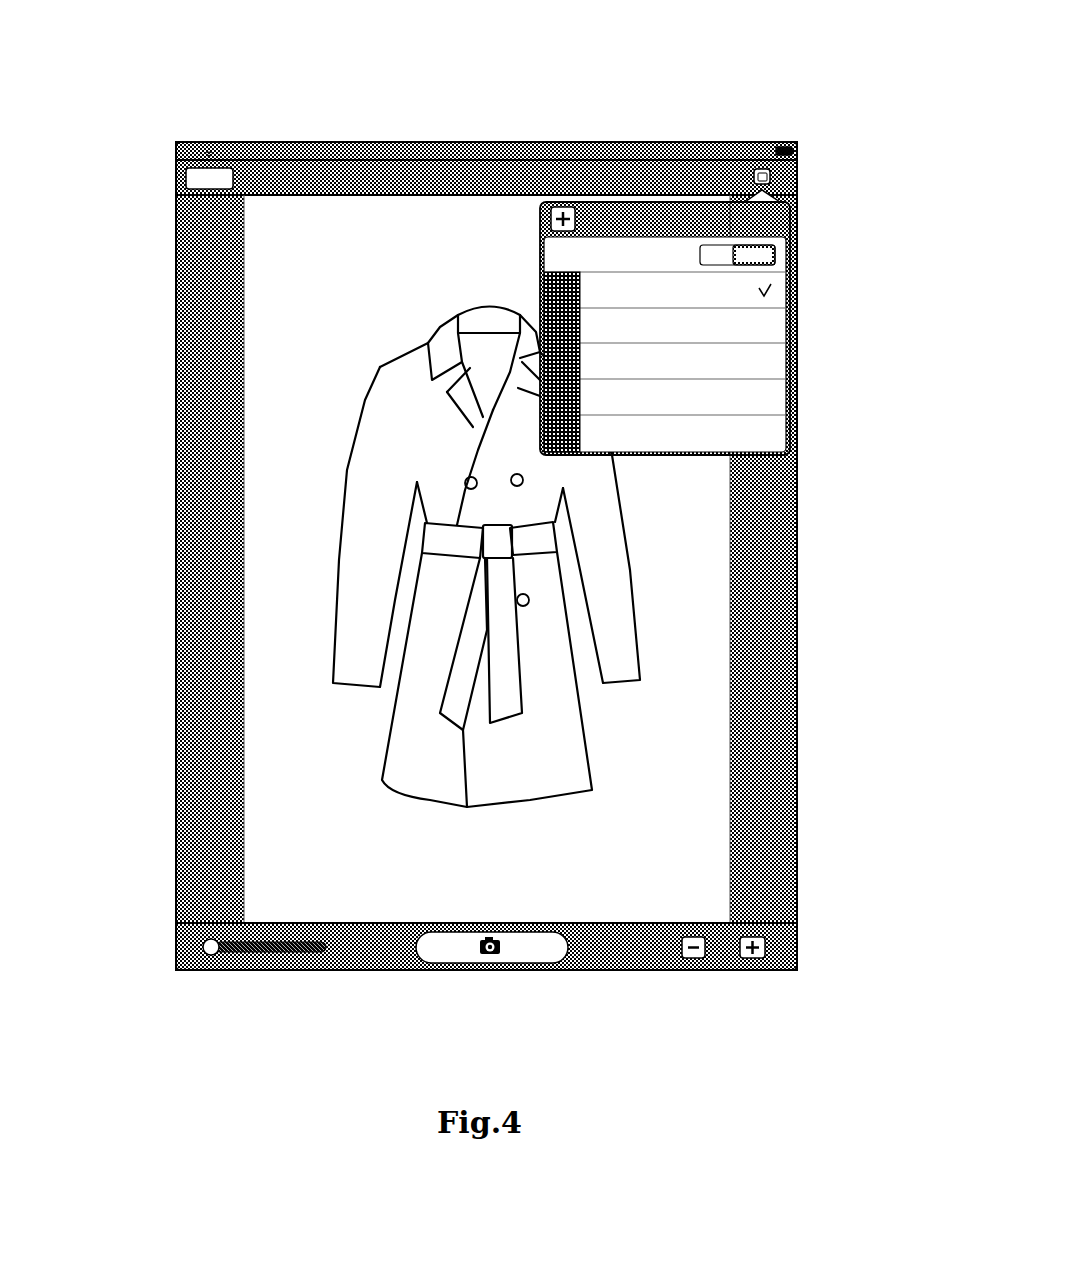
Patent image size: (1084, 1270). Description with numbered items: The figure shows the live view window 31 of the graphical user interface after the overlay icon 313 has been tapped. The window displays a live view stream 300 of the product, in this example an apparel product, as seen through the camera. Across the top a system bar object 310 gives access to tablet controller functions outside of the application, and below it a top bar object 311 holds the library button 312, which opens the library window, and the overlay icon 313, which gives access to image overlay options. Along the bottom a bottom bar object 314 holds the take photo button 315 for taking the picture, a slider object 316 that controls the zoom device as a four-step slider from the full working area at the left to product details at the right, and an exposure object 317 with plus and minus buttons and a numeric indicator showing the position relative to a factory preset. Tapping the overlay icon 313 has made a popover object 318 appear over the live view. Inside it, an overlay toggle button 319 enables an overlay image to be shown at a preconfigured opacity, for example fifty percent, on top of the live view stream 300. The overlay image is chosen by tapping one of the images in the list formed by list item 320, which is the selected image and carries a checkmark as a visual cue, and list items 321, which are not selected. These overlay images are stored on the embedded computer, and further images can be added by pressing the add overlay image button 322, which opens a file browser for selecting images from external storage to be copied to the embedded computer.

The live view window 31 is at (746, 90).
The live view stream 300 is at (349, 431).
The system bar object 310 is at (593, 148).
The top bar object 311 is at (335, 182).
The library button 312 is at (198, 182).
The overlay icon 313 is at (772, 178).
The bottom bar object 314 is at (597, 938).
The take photo button 315 is at (456, 952).
The slider object 316 is at (258, 947).
The exposure object 317 is at (725, 952).
The popover object 318 is at (805, 205).
The overlay toggle button 319 is at (548, 258).
The list item 320 is at (556, 293).
The list items 321 is at (707, 330).
The add overlay image button 322 is at (550, 217).